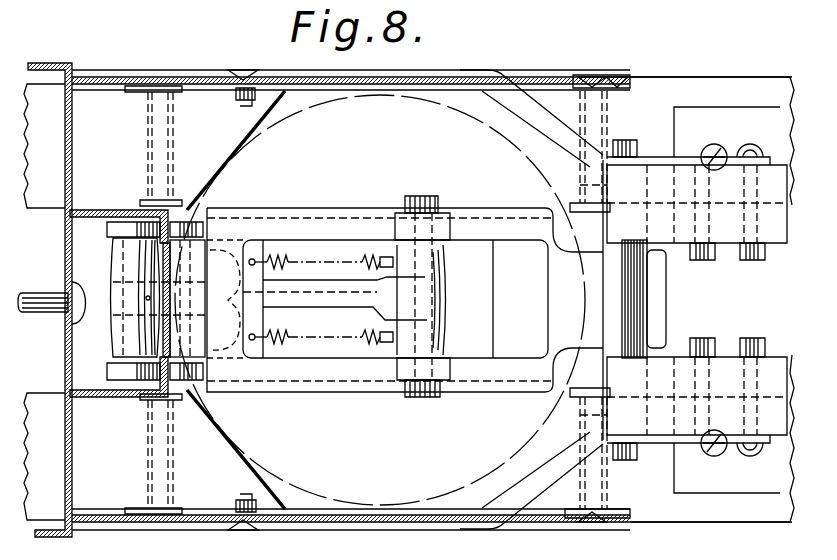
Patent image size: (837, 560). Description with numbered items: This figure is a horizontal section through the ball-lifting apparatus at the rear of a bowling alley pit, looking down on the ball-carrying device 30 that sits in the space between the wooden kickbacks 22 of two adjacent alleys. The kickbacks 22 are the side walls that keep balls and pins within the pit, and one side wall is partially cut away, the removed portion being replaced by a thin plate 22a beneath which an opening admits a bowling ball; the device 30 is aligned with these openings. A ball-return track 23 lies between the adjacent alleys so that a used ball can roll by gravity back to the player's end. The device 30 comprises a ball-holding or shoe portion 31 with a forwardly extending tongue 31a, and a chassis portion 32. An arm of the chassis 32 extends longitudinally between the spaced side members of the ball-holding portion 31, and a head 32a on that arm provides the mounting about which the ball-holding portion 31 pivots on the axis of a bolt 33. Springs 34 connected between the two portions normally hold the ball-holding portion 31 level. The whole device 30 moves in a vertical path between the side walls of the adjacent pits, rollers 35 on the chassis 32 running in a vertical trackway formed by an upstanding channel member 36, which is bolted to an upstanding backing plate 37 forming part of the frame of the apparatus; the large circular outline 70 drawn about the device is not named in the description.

The wooden kickback 22 is at (42, 195).
The thin plate 22a is at (486, 76).
The ball-return track 23 is at (772, 365).
The ball-carrying device 30 is at (377, 202).
The ball-holding portion 31 is at (313, 225).
The tongue 31a is at (660, 293).
The chassis portion 32 is at (333, 300).
The head 32a is at (447, 290).
The bolt 33 is at (430, 193).
The springs 34 is at (277, 255).
The rollers 35 is at (115, 228).
The channel member 36 is at (93, 215).
The backing plate 37 is at (72, 467).
The rotor drum 70 is at (607, 315).